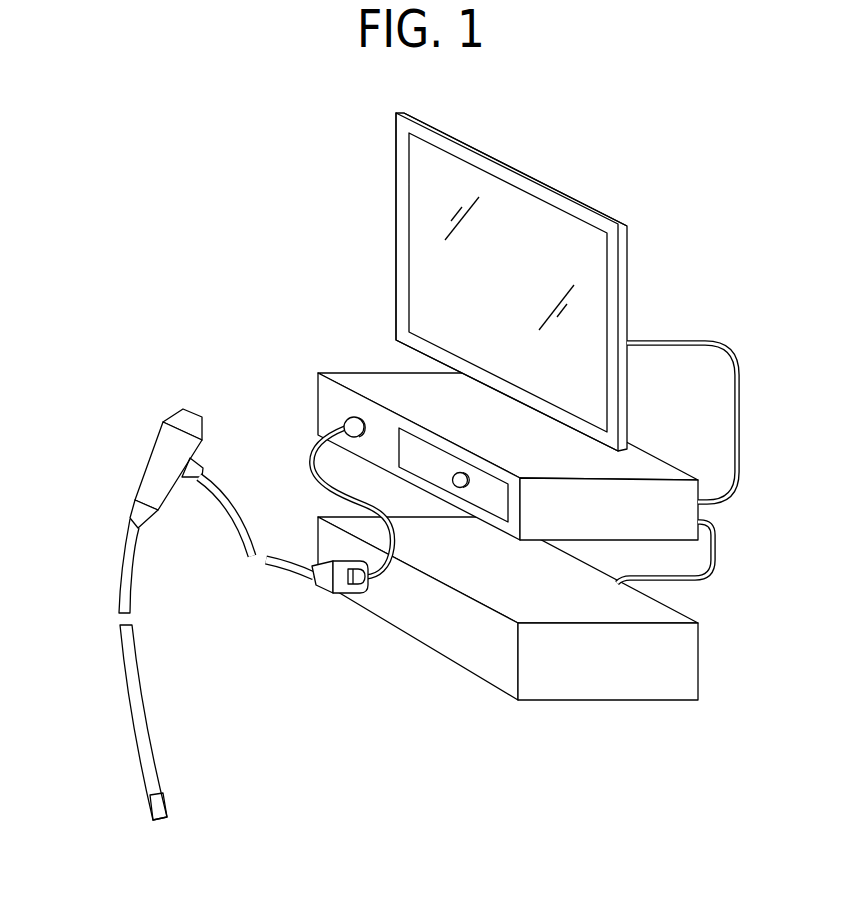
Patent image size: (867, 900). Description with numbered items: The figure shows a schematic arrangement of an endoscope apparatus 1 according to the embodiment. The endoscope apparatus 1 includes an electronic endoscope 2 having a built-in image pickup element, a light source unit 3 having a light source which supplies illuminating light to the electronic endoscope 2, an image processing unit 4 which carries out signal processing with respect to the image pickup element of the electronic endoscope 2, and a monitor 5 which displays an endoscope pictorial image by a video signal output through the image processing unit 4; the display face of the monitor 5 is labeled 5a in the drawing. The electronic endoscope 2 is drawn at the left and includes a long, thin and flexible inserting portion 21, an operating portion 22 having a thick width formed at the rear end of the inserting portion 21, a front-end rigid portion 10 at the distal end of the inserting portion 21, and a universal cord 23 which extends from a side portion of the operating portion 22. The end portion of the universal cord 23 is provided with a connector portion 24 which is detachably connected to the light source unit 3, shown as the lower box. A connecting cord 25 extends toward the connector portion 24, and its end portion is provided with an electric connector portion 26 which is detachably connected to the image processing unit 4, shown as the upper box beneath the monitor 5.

The endoscope apparatus 1 is at (265, 248).
The electronic endoscope 2 is at (135, 412).
The light source unit 3 is at (463, 668).
The image processing unit 4 is at (360, 373).
The monitor 5 is at (492, 282).
The display screen 5a is at (428, 270).
The front-end rigid portion 10 is at (153, 812).
The inserting portion 21 is at (118, 592).
The operating portion 22 is at (150, 455).
The universal cord 23 is at (224, 536).
The connector portion 24 is at (353, 594).
The connecting cord 25 is at (313, 459).
The electric connector portion 26 is at (347, 418).